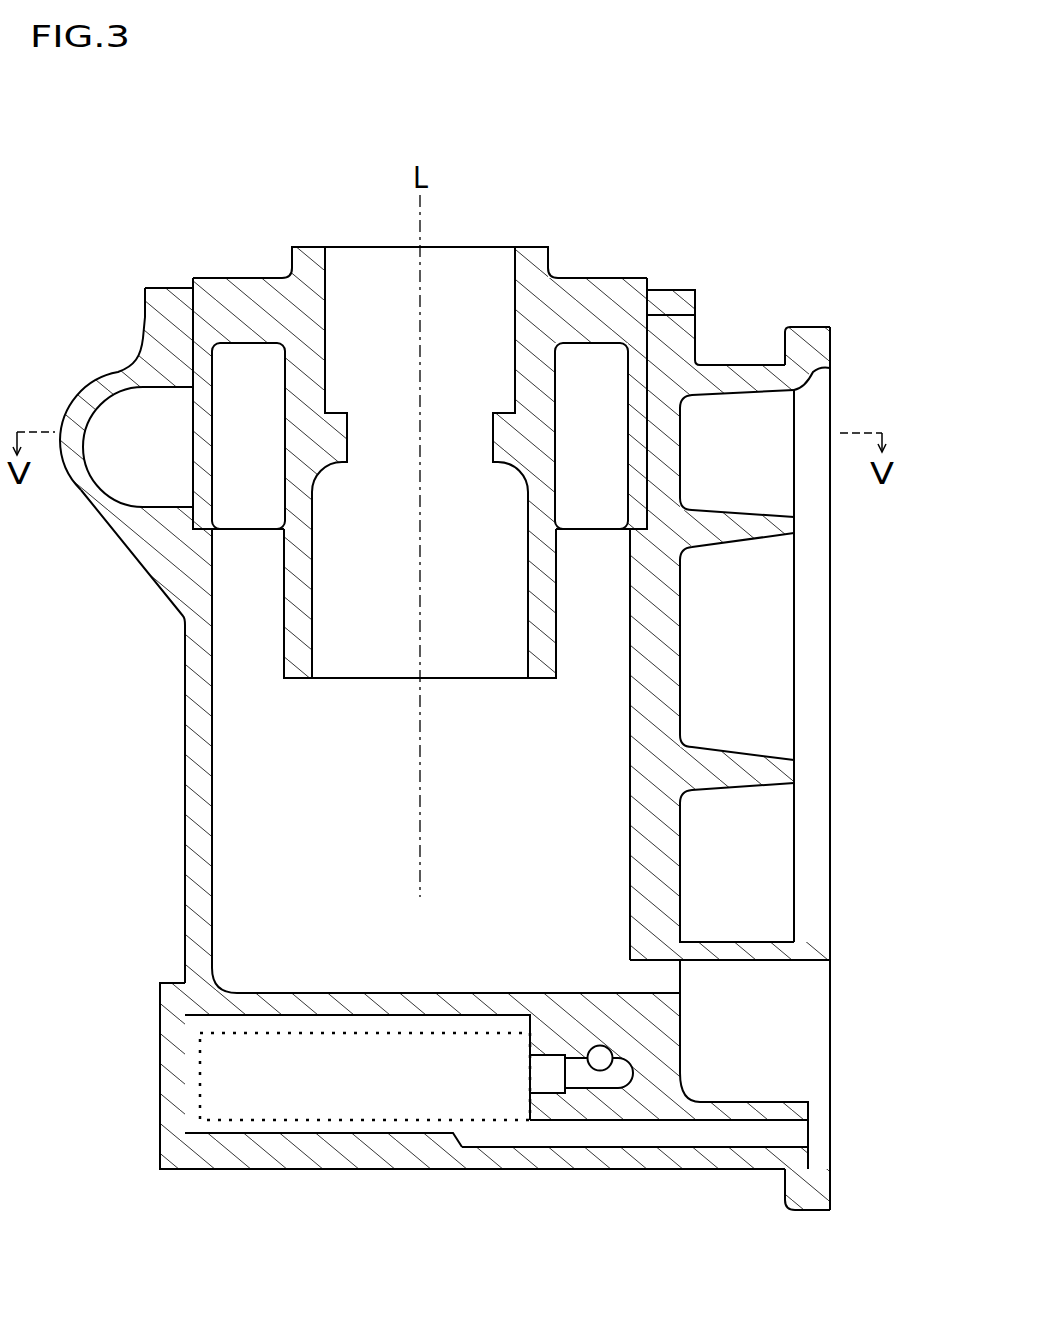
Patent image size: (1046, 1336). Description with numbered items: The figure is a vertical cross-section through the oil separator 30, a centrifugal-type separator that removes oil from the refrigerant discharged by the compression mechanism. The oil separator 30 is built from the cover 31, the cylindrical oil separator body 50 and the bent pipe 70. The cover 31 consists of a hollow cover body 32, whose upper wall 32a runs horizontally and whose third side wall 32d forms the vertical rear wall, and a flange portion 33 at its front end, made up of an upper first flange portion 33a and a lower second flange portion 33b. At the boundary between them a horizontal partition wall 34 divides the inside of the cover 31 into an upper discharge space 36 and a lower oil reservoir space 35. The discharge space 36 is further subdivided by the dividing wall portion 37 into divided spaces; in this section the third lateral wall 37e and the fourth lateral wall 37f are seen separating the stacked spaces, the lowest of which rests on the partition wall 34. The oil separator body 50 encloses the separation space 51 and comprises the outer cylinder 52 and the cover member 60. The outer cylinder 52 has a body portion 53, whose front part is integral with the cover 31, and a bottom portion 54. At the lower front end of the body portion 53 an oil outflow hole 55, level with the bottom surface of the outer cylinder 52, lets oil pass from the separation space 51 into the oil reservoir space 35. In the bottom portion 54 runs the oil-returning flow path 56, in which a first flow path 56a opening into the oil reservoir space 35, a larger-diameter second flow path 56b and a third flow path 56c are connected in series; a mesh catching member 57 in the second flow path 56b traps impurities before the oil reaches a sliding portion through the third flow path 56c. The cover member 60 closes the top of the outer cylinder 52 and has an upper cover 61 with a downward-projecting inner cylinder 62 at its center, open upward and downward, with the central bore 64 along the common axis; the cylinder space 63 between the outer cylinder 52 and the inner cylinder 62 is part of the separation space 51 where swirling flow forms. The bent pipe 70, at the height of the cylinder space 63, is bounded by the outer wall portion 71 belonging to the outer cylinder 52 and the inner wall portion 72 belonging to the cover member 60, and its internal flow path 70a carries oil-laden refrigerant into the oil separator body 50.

The oil separator 30 is at (686, 176).
The cover 31 is at (728, 688).
The cover body 32 is at (728, 605).
The upper wall 32a is at (748, 363).
The third side wall 32d is at (653, 728).
The flange portion 33 is at (855, 728).
The first flange portion 33a is at (832, 349).
The second flange portion 33b is at (832, 1185).
The partition wall 34 is at (817, 950).
The oil reservoir space 35 is at (793, 1053).
The discharge space 36 is at (764, 449).
The dividing wall portion 37 is at (773, 543).
The third lateral wall 37e is at (796, 532).
The fourth lateral wall 37f is at (795, 771).
The oil separator body 50 is at (462, 707).
The separation space 51 is at (391, 790).
The outer cylinder 52 is at (185, 722).
The body portion 53 is at (185, 815).
The bottom portion 54 is at (653, 1053).
The oil outflow hole 55 is at (663, 977).
The oil-returning flow path 56 is at (507, 1135).
The first flow path 56a is at (720, 1133).
The second flow path 56b is at (395, 1102).
The third flow path 56c is at (597, 1077).
The catching member 57 is at (297, 1120).
The cover member 60 is at (373, 420).
The upper cover 61 is at (583, 277).
The inner cylinder 62 is at (300, 657).
The cylinder space 63 is at (611, 462).
The bore 64 is at (404, 582).
The bent pipe 70 is at (100, 373).
The internal flow path 70a is at (173, 469).
The outer wall portion 71 is at (78, 480).
The inner wall portion 72 is at (198, 462).